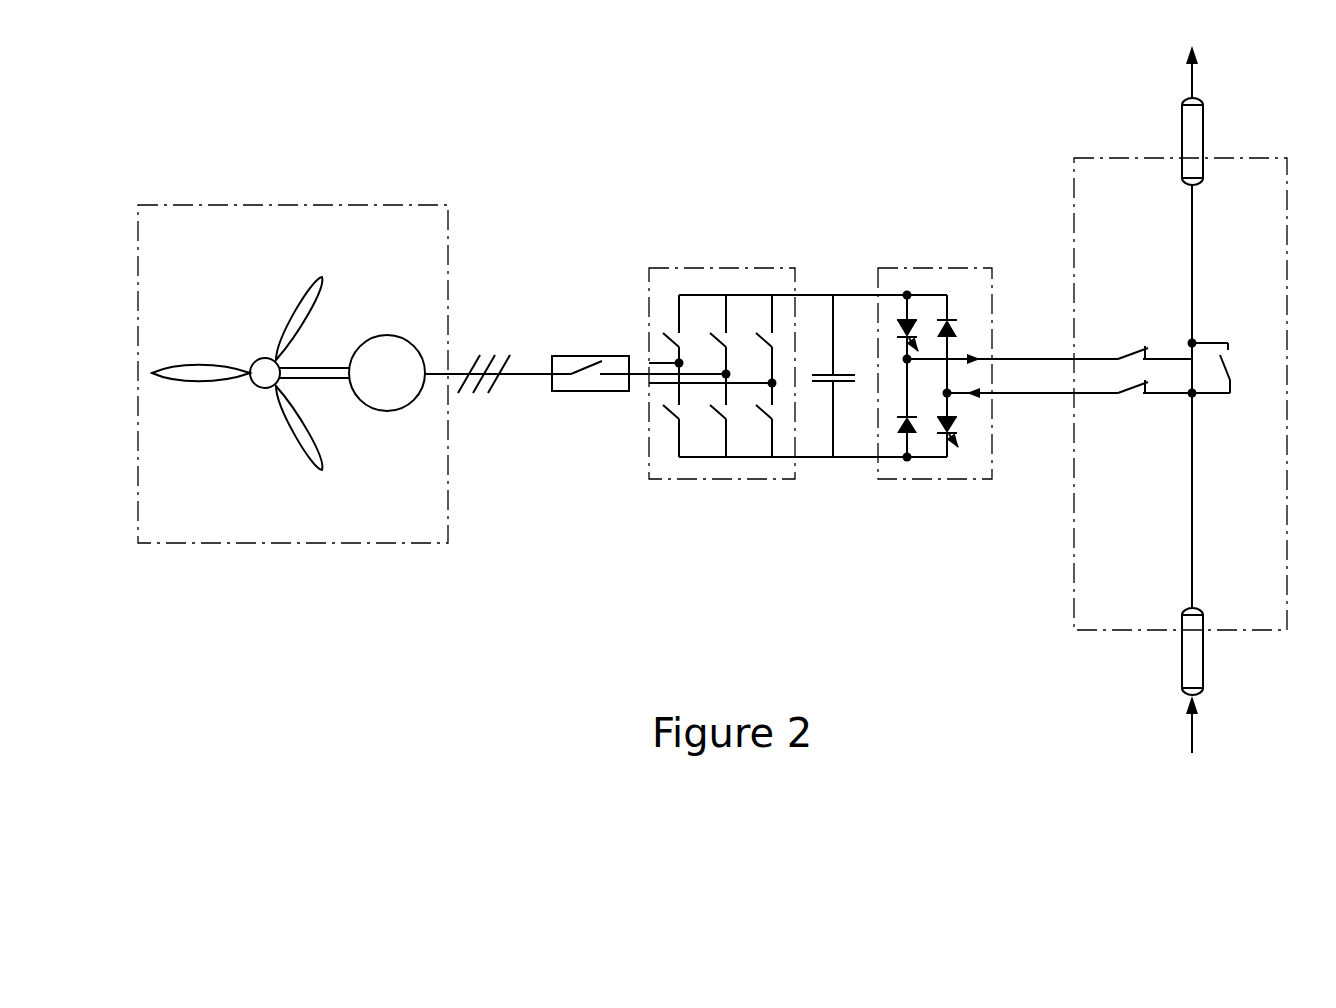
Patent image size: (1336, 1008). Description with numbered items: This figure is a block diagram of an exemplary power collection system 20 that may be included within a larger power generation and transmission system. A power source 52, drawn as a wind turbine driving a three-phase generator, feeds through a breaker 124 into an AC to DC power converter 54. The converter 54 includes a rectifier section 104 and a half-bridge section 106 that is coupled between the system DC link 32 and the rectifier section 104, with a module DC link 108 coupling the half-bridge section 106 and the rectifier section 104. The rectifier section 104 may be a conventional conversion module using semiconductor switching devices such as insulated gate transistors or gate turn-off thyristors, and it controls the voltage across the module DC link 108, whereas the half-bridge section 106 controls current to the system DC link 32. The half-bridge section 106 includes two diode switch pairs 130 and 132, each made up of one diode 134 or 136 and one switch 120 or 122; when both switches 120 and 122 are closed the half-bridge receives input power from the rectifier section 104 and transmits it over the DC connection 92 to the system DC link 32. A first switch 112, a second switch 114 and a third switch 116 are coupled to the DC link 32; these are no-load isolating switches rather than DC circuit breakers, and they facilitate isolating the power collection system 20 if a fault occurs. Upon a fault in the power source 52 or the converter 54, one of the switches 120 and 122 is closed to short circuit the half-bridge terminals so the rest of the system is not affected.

The power collection system 20 is at (898, 183).
The system DC link 32 is at (1193, 82).
The power source 52 is at (354, 310).
The AC to DC power converter 54 is at (728, 230).
The DC link 92 is at (1005, 387).
The rectifier section 104 is at (755, 268).
The half-bridge section 106 is at (931, 373).
The module DC link 108 is at (839, 317).
The first switch 112 is at (1232, 360).
The second switch 114 is at (1148, 348).
The third switch 116 is at (1148, 386).
The switch 120 is at (910, 315).
The switch 122 is at (957, 423).
The circuit breaker 124 is at (592, 356).
The diode switch pair 130 is at (903, 474).
The diode switch pair 132 is at (956, 469).
The diode 134 is at (900, 425).
The diode 136 is at (953, 328).